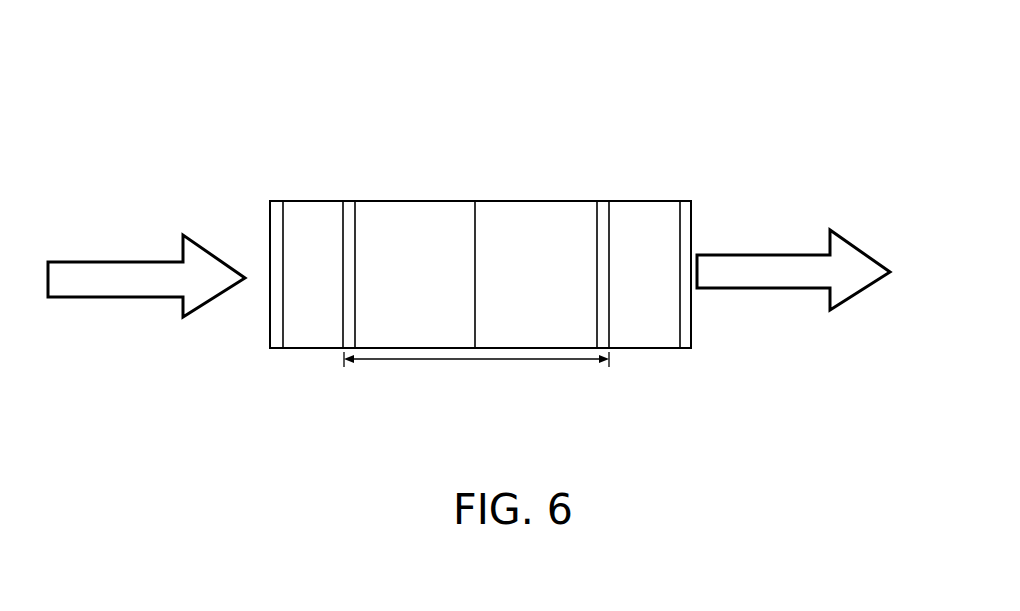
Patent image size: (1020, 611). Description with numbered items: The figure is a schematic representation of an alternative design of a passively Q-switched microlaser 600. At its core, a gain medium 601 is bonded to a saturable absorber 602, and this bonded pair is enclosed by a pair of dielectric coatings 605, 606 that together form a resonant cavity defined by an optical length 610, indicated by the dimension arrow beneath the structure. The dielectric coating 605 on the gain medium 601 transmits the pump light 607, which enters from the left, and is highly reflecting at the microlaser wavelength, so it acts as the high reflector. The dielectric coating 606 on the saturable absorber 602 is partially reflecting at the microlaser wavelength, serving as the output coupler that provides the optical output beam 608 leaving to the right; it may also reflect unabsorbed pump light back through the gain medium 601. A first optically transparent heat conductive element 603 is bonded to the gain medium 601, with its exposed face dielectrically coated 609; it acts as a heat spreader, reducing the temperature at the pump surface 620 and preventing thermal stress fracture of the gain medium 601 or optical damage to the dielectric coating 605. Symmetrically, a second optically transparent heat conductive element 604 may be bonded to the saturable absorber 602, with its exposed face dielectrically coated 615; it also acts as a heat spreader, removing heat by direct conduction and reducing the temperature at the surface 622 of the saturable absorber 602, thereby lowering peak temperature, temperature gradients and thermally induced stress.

The passively Q-switched microlaser 600 is at (492, 88).
The gain medium 601 is at (438, 200).
The saturable absorber 602 is at (520, 198).
The first optically transparent heat conductive element 603 is at (300, 352).
The second optically transparent heat conductive element 604 is at (652, 350).
The dielectric coating 605 is at (354, 198).
The dielectric coating 606 is at (598, 197).
The pump light 607 is at (119, 258).
The optical output beam 608 is at (764, 252).
The dielectric coating on exposed face 609 is at (270, 202).
The optical length 610 is at (476, 371).
The dielectric coating on exposed face 615 is at (692, 201).
The pump surface 620 is at (338, 200).
The surface of the saturable absorber 622 is at (616, 200).